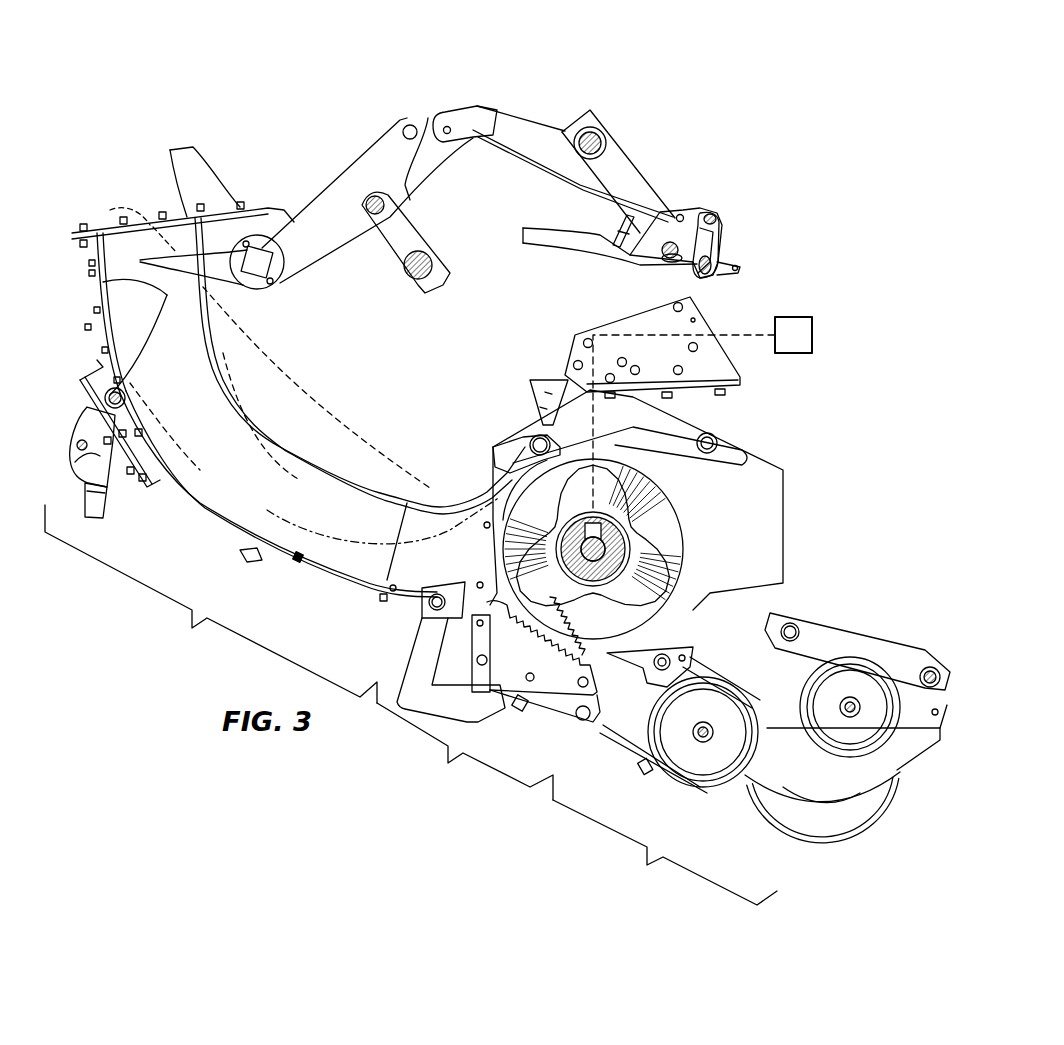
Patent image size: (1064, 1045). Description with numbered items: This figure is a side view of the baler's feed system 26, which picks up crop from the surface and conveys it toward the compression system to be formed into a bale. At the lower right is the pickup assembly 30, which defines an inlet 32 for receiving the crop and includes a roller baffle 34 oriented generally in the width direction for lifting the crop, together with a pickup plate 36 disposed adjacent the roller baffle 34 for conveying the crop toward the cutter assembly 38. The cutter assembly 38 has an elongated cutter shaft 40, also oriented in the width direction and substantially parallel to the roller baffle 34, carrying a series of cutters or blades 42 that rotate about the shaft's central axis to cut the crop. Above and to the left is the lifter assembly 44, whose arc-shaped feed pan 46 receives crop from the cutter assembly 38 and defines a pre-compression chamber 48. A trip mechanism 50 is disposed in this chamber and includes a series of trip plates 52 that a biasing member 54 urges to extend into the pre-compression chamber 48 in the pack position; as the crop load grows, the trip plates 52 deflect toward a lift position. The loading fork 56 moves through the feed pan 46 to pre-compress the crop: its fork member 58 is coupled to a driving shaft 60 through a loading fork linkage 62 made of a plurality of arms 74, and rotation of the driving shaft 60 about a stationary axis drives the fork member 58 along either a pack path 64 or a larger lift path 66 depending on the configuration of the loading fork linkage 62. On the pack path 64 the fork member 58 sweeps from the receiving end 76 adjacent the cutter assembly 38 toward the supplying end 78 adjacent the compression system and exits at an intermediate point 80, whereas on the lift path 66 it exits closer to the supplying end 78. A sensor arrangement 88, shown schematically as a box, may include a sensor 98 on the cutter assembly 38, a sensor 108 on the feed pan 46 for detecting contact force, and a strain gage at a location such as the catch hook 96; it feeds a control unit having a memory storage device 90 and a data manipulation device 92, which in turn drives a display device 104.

The feed system 26 is at (860, 166).
The pickup assembly 30 is at (665, 852).
The inlet 32 is at (945, 699).
The roller baffle 34 is at (873, 653).
The pickup plate 36 is at (757, 607).
The cutter assembly 38 is at (465, 751).
The cutter shaft 40 is at (640, 537).
The cutters or blades 42 is at (667, 585).
The lifter assembly 44 is at (211, 604).
The feed pan 46 is at (312, 563).
The pre-compression chamber 48 is at (187, 323).
The trip mechanism 50 is at (80, 343).
The trip plates 52 is at (120, 303).
The biasing member 54 is at (87, 397).
The loading fork 56 is at (319, 147).
The fork member 58 is at (280, 273).
The driving shaft 60 is at (437, 263).
The loading fork linkage 62 is at (415, 228).
The pack path 64 is at (227, 540).
The lift path 66 is at (168, 505).
The arms 74 is at (452, 122).
The receiving end 76 is at (417, 603).
The supplying end 78 is at (132, 248).
The intermediate point 80 is at (220, 380).
The sensor arrangement 88 is at (812, 340).
The memory storage device 90 is at (793, 335).
The data manipulation device 92 is at (793, 335).
The catch hook 96 is at (702, 213).
The sensor 98 is at (540, 433).
The display device 104 is at (793, 335).
The sensor 108 is at (298, 562).